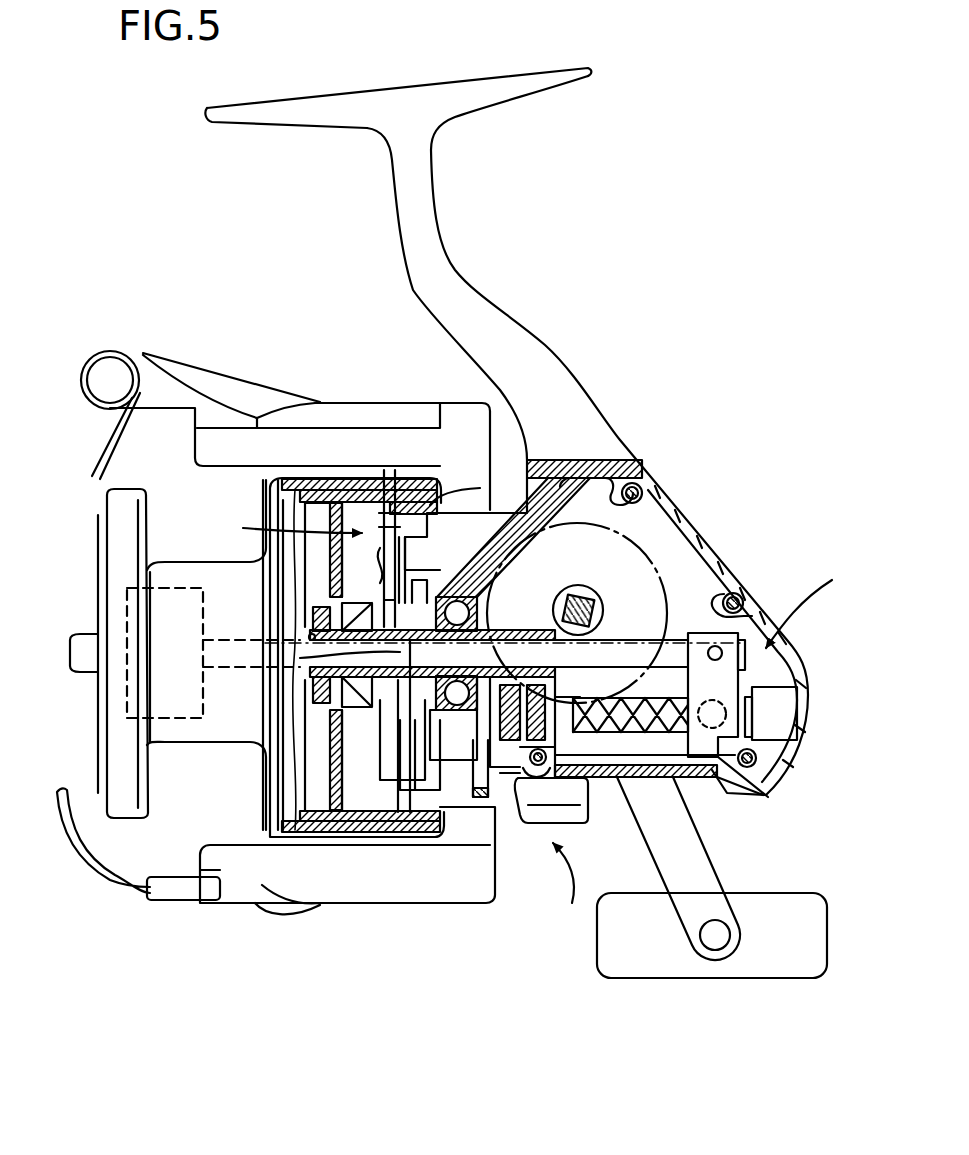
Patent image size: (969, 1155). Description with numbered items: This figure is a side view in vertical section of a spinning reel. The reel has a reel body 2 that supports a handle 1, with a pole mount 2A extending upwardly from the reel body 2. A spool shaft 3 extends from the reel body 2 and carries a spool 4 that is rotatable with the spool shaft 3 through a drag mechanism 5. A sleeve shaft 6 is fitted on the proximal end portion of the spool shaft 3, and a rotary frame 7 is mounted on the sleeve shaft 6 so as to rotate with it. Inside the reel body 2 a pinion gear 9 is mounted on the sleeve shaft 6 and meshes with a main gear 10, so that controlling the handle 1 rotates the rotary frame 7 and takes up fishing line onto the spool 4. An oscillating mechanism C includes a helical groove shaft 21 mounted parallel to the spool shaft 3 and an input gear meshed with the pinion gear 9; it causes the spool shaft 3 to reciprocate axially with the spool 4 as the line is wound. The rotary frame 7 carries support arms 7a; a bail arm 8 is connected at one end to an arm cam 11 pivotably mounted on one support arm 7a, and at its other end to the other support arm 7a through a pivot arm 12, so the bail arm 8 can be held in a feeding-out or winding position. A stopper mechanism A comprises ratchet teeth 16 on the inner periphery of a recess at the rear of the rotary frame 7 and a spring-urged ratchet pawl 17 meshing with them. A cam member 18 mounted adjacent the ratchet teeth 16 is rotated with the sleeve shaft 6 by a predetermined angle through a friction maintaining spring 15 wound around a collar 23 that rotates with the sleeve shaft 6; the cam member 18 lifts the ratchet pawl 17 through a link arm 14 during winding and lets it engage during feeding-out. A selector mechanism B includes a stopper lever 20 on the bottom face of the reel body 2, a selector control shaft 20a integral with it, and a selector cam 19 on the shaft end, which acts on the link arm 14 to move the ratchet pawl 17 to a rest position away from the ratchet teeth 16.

The handle 1 is at (710, 877).
The reel body 2 is at (598, 432).
The pole mount 2A is at (428, 187).
The spool shaft 3 is at (677, 650).
The spool 4 is at (222, 733).
The drag mechanism 5 is at (168, 588).
The sleeve shaft 6 is at (310, 636).
The rotary frame 7 is at (497, 905).
The support arms 7a is at (352, 407).
The bail arm 8 is at (108, 883).
The pinion gear 9 is at (517, 617).
The main gear 10 is at (650, 550).
The arm cam 11 is at (220, 378).
The pivot arm 12 is at (250, 910).
The link arm 14 is at (408, 740).
The friction maintaining spring 15 is at (385, 698).
The ratchet teeth 16 is at (455, 505).
The ratchet pawl 17 is at (393, 503).
The cam member 18 is at (462, 782).
The selector cam 19 is at (398, 760).
The stopper lever 20 is at (577, 822).
The selector control shaft 20a is at (480, 800).
The helical groove shaft 21 is at (642, 737).
The collar 23 is at (307, 655).
The stopper mechanism A is at (292, 526).
The selector mechanism B is at (572, 896).
The oscillating mechanism C is at (820, 593).